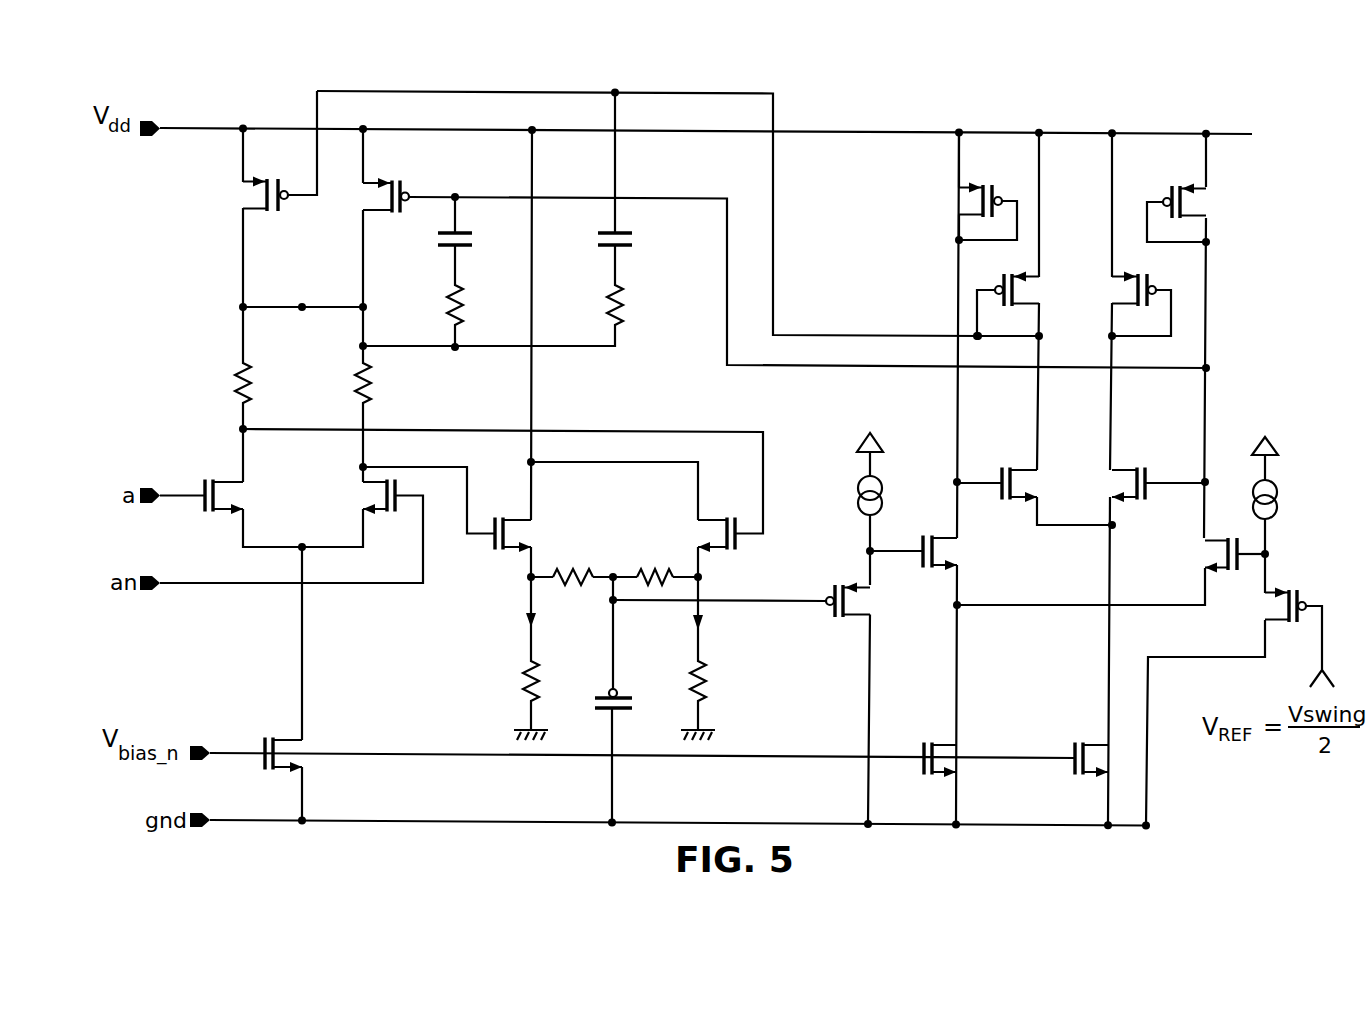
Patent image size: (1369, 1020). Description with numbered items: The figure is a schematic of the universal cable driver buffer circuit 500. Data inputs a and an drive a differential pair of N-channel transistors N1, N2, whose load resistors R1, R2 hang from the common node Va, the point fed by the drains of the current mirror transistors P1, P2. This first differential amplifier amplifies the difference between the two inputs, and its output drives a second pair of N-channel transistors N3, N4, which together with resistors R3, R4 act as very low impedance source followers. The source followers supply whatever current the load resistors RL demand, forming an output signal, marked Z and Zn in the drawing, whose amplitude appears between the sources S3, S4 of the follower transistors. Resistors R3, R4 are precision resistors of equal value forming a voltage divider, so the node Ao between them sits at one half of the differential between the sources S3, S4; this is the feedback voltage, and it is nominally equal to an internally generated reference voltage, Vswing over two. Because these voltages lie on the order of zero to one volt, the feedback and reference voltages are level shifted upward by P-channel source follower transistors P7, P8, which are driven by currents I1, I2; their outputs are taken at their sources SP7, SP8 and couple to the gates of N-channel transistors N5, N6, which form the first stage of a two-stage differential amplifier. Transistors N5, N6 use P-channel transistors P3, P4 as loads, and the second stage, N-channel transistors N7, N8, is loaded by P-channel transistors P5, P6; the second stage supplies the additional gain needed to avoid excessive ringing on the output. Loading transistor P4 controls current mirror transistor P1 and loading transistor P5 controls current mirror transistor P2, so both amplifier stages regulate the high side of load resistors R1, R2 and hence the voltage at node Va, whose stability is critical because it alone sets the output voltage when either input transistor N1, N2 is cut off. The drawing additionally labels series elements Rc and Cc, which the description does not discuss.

The universal cable driver buffer circuit 500 is at (252, 69).
The current mirror transistor P1 is at (263, 199).
The current mirror transistor P2 is at (770, 248).
The loading transistor P3 is at (974, 186).
The loading transistor P4 is at (1191, 213).
The loading transistor P5 is at (1021, 306).
The loading transistor P6 is at (1127, 304).
The source follower transistor P7 is at (757, 703).
The source follower transistor P8 is at (1280, 638).
The input differential pair transistor N1 is at (241, 471).
The input differential pair transistor N2 is at (362, 471).
The source follower transistor N3 is at (530, 535).
The source follower transistor N4 is at (701, 535).
The first stage differential amplifier transistor N5 is at (931, 553).
The first stage differential amplifier transistor N6 is at (1216, 555).
The second stage differential amplifier transistor N7 is at (1014, 485).
The second stage differential amplifier transistor N8 is at (1142, 485).
The load resistor R1 is at (224, 368).
The load resistor R2 is at (348, 368).
The voltage divider resistor R3 is at (575, 566).
The voltage divider resistor R4 is at (655, 566).
The load resistor RL is at (612, 658).
The compensation resistor Rc is at (550, 317).
The compensation capacitor Cc is at (552, 188).
The common node Va is at (302, 307).
The output signal Z is at (519, 619).
The complementary output signal Zn is at (710, 625).
The node between resistors R3 and R4 Ao is at (612, 580).
The source of transistor N3 S3 is at (518, 549).
The source of transistor N4 S4 is at (712, 549).
The current I1 is at (850, 482).
The current I2 is at (1285, 488).
The source of transistor P7 SP7 is at (864, 582).
The source of transistor P8 SP8 is at (1278, 588).